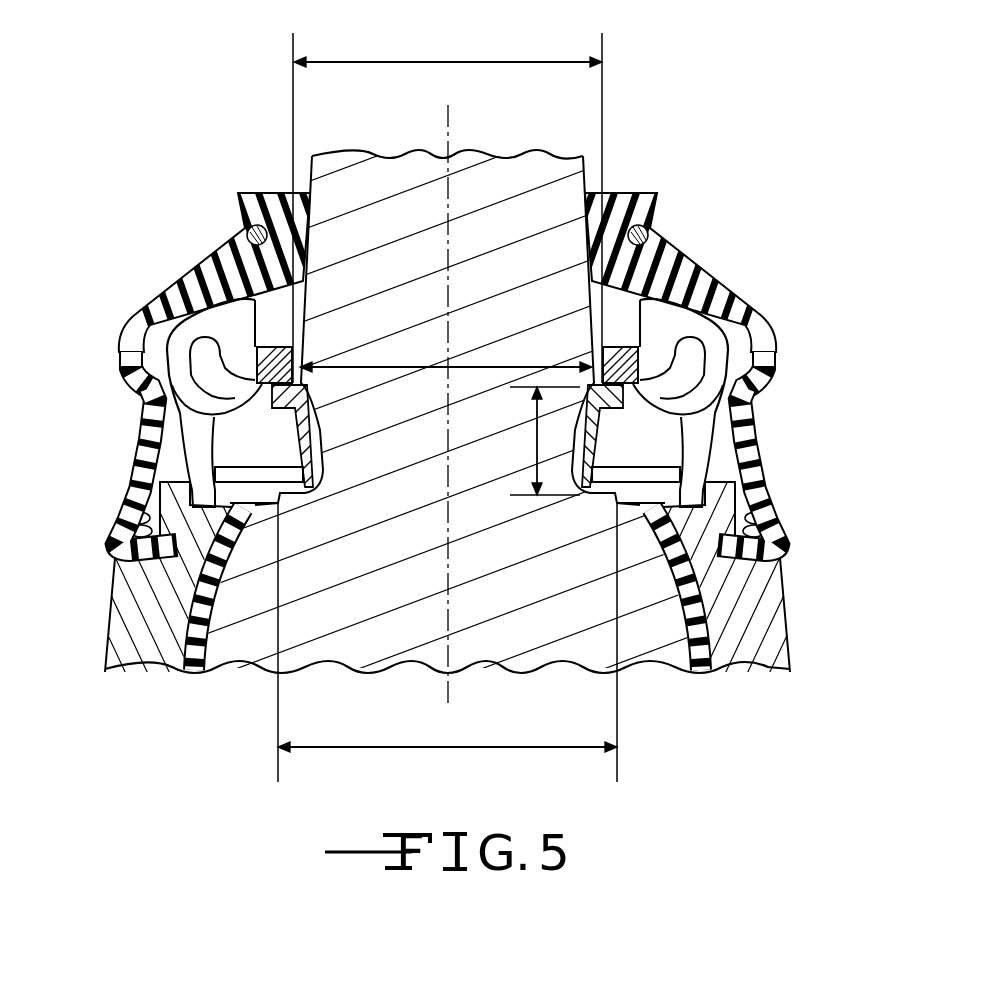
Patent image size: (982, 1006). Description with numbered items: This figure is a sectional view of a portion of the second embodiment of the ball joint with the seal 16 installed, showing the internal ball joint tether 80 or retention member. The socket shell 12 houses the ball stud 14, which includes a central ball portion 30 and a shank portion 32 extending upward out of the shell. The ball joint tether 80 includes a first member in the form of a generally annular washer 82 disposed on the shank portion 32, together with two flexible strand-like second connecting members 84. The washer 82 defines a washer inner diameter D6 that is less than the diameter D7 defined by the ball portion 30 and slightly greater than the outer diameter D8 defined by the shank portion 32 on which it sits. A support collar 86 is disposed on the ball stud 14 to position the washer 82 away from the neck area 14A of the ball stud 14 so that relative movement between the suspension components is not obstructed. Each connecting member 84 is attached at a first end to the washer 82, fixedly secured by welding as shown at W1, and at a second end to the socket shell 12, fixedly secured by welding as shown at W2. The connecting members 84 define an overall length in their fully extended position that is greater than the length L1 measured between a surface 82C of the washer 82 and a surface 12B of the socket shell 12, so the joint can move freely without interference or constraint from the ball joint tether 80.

The socket shell 12 is at (805, 658).
The surface of the socket shell 12B is at (715, 503).
The ball stud 14 is at (232, 671).
The neck area 14A is at (338, 402).
The seal 16 is at (148, 290).
The central ball portion 30 is at (632, 640).
The shank portion 32 is at (503, 177).
The ball joint tether 80 is at (782, 393).
The washer 82 is at (620, 330).
The surface of the washer 82C is at (180, 410).
The second connecting member 84 is at (740, 330).
The support collar 86 is at (313, 450).
The weld W1 is at (250, 268).
The weld W2 is at (710, 467).
The washer inner diameter D6 is at (422, 62).
The ball portion diameter D7 is at (415, 750).
The shank outer diameter D8 is at (457, 363).
The length L1 is at (535, 445).